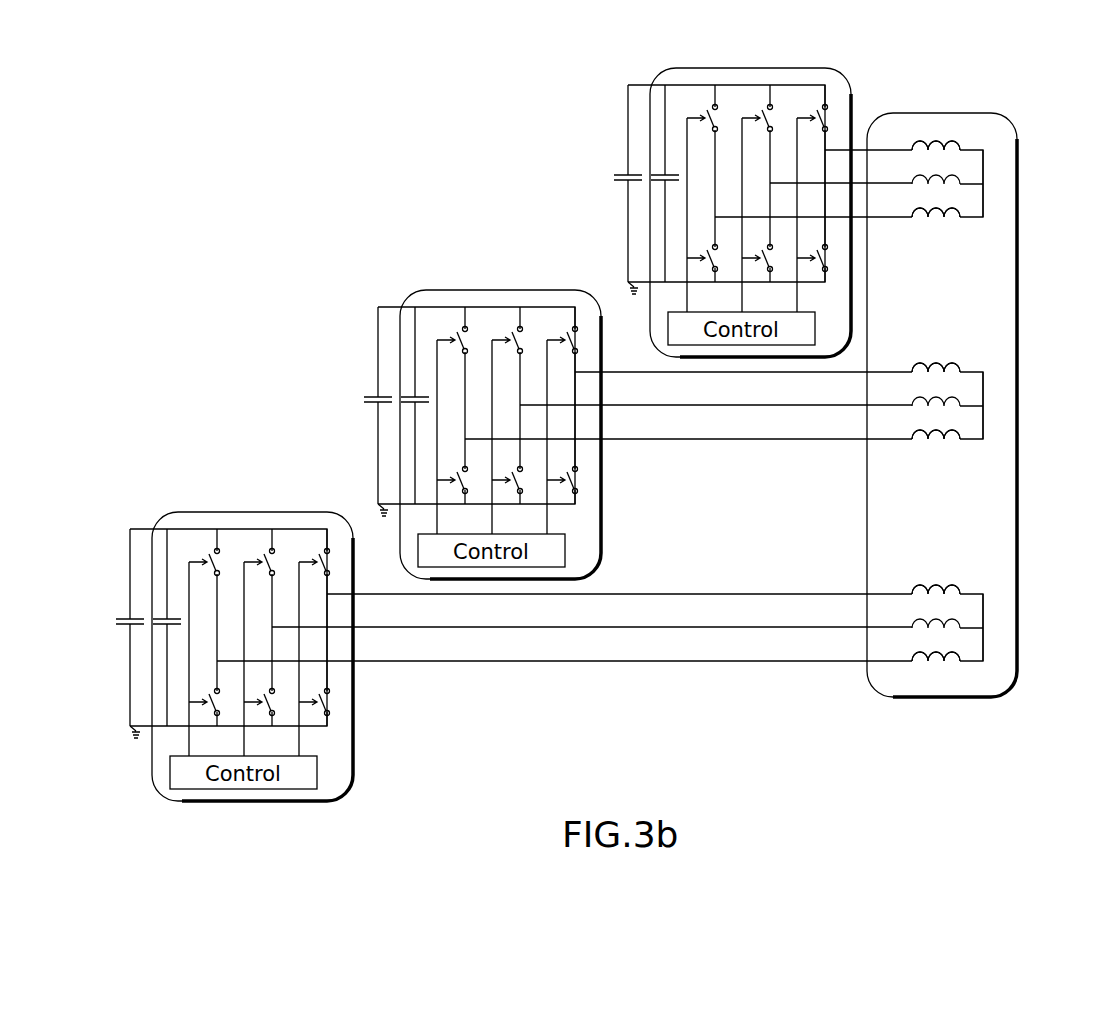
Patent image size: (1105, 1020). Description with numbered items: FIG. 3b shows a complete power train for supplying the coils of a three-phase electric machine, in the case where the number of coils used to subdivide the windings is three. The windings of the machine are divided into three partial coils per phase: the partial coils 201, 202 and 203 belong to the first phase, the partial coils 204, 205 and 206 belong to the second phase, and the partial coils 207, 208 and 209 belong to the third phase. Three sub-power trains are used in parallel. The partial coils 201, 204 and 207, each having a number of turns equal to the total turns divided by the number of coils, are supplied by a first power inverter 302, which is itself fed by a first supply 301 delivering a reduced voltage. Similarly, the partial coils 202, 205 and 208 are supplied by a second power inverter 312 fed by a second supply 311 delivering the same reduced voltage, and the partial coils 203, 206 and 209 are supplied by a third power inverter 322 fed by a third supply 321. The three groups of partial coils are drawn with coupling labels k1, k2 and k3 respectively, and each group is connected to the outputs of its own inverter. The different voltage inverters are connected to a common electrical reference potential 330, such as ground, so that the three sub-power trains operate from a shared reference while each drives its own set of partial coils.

The partial coil 201 is at (937, 140).
The partial coil 202 is at (937, 362).
The partial coil 203 is at (937, 584).
The partial coil 204 is at (960, 172).
The partial coil 205 is at (960, 394).
The partial coil 206 is at (960, 616).
The partial coil 207 is at (960, 230).
The partial coil 208 is at (960, 452).
The partial coil 209 is at (960, 674).
The coupling coefficient of first coil set k1 is at (988, 185).
The coupling coefficient of second coil set k2 is at (988, 407).
The coupling coefficient of third coil set k3 is at (988, 629).
The first supply 301 is at (604, 175).
The first power inverter 302 is at (712, 68).
The second supply 311 is at (358, 396).
The second power inverter 312 is at (462, 290).
The third supply 321 is at (110, 620).
The third power inverter 322 is at (182, 512).
The common electrical reference potential 330 is at (623, 287).